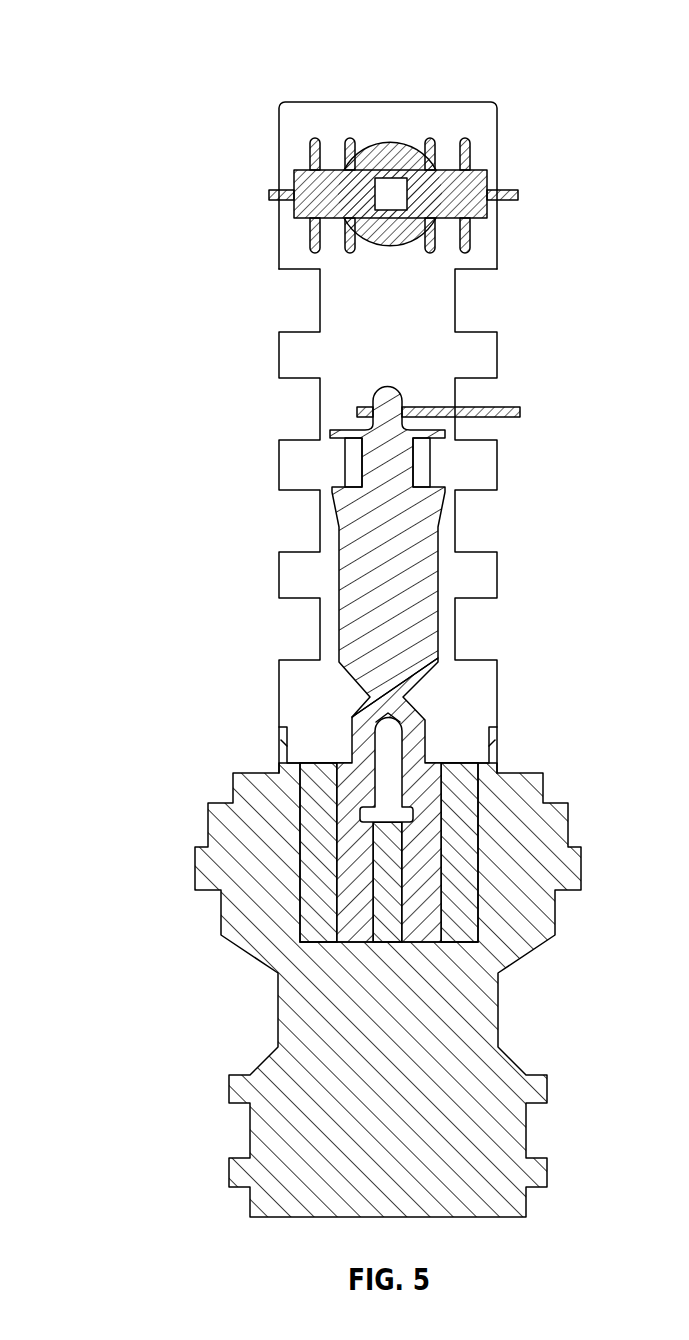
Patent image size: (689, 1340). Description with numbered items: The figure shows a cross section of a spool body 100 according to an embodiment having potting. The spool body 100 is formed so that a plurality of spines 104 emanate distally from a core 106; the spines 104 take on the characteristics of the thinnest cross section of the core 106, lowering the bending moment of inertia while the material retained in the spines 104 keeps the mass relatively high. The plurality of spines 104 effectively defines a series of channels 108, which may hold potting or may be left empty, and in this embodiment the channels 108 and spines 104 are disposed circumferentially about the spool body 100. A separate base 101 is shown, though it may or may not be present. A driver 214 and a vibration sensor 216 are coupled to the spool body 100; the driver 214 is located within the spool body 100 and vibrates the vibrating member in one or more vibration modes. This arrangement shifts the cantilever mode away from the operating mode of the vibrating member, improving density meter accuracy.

The spool body 100 is at (120, 40).
The base 101 is at (480, 1020).
The spines 104 is at (483, 355).
The core 106 is at (423, 290).
The channels 108 is at (298, 268).
The driver 214 is at (420, 630).
The vibration sensor 216 is at (407, 160).